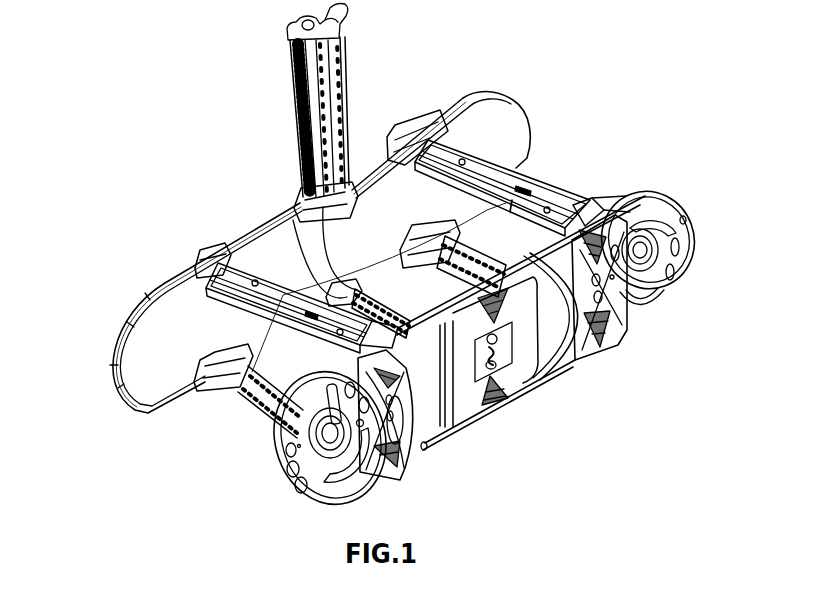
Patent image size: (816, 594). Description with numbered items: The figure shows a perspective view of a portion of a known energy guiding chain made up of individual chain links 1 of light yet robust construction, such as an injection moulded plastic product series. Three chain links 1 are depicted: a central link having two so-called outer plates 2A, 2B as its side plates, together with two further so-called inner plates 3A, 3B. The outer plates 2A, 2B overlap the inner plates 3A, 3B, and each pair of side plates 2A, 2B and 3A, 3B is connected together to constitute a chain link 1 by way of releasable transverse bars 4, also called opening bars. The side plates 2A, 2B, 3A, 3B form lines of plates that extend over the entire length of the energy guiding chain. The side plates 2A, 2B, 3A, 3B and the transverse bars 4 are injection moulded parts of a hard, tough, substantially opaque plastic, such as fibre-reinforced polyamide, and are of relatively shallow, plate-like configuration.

The chain link 1 is at (476, 82).
The outer plate 2A is at (478, 415).
The outer plate 2B is at (271, 205).
The inner plate 3A is at (628, 195).
The inner plate 3B is at (521, 100).
The transverse bar 4 is at (236, 408).